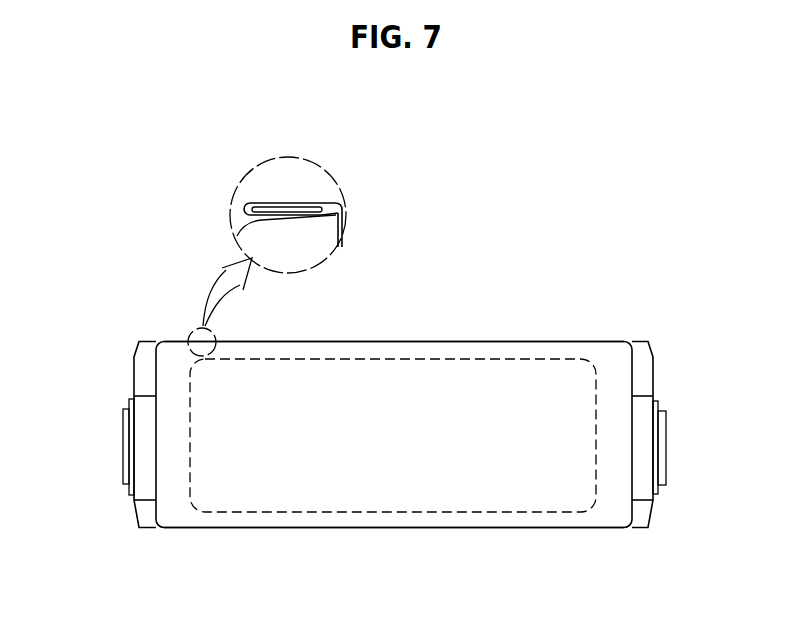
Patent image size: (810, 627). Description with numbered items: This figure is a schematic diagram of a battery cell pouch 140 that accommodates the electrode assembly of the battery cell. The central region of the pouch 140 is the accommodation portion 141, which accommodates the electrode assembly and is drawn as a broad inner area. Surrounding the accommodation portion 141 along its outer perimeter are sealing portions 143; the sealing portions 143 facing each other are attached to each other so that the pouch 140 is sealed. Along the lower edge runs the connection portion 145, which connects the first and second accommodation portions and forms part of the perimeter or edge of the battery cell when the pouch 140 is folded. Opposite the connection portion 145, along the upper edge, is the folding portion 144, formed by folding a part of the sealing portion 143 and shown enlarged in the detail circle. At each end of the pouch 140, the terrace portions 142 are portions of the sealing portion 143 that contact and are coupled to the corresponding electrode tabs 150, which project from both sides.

The pouch 140 is at (90, 128).
The accommodation portion 141 is at (512, 488).
The terrace portion 142 is at (138, 500).
The sealing portion 143 is at (456, 342).
The folding portion 144 is at (288, 203).
The connection portion 145 is at (390, 528).
The electrode tab 150 is at (123, 442).